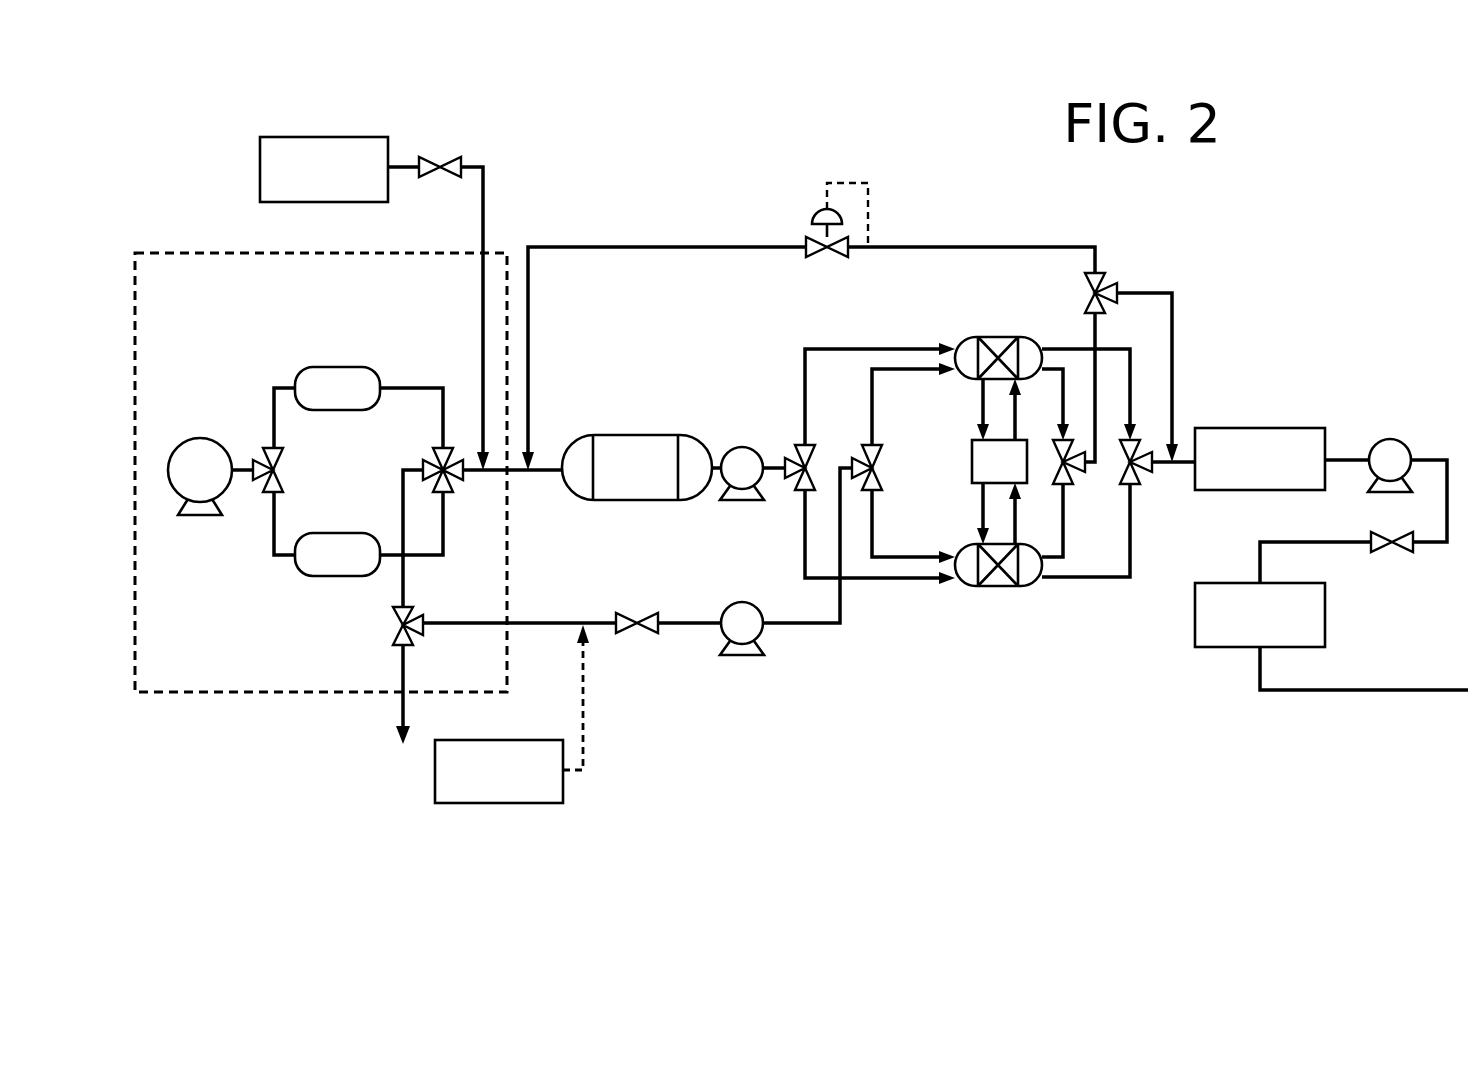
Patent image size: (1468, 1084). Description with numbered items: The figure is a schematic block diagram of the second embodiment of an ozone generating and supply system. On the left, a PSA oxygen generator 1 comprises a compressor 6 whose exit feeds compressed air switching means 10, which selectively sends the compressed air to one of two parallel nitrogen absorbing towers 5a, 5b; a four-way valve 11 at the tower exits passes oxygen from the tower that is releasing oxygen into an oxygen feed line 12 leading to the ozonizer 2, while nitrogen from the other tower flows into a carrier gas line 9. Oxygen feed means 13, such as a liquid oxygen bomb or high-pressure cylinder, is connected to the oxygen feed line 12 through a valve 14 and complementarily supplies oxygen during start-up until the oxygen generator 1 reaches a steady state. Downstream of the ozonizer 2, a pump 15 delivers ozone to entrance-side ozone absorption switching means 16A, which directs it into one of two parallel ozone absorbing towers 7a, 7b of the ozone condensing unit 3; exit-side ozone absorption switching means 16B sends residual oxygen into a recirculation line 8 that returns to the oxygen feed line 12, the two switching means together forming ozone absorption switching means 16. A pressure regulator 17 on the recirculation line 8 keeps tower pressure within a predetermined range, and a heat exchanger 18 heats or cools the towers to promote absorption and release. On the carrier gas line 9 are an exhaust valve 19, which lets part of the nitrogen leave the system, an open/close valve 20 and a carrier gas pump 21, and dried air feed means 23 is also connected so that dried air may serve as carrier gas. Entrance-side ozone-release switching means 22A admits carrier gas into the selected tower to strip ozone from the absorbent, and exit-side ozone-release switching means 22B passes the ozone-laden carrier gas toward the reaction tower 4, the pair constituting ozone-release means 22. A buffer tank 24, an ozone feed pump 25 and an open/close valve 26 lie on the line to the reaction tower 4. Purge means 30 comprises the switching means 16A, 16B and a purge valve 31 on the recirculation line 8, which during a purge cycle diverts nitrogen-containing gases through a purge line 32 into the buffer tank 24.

The PSA oxygen generator 1 is at (204, 692).
The ozonizer 2 is at (636, 435).
The ozone condensing unit 3 is at (947, 610).
The reaction tower 4 is at (1325, 622).
The nitrogen absorbing tower 5a is at (340, 367).
The nitrogen absorbing tower 5b is at (320, 578).
The compressor 6 is at (206, 446).
The ozone absorbing tower 7a is at (1022, 323).
The ozone absorbing tower 7b is at (986, 586).
The recirculation line 8 is at (612, 247).
The carrier gas line 9 is at (832, 628).
The compressed air switching means 10 is at (282, 482).
The four-way valve 11 is at (426, 462).
The oxygen feed line 12 is at (502, 475).
The oxygen feed means 13 is at (360, 137).
The valve 14 is at (440, 157).
The pump 15 is at (737, 446).
The ozone absorption switching means 16 is at (792, 347).
The entrance-side ozone absorption switching means 16A is at (800, 442).
The exit-side ozone absorption switching means 16B is at (1095, 482).
The pressure regulator 17 is at (804, 240).
The heat exchanger 18 is at (972, 472).
The exhaust valve 19 is at (396, 638).
The open/close valve 20 is at (626, 612).
The carrier gas pump 21 is at (742, 602).
The ozone-release means 22 is at (1162, 436).
The entrance-side ozone-release switching means 22A is at (869, 442).
The exit-side ozone-release switching means 22B is at (1164, 482).
The dried air feed means 23 is at (514, 740).
The buffer tank 24 is at (1306, 428).
The ozone feed pump 25 is at (1392, 440).
The open/close valve 26 is at (1372, 542).
The purge means 30 is at (1178, 319).
The purge valve 31 is at (1084, 300).
The purge line 32 is at (1143, 292).